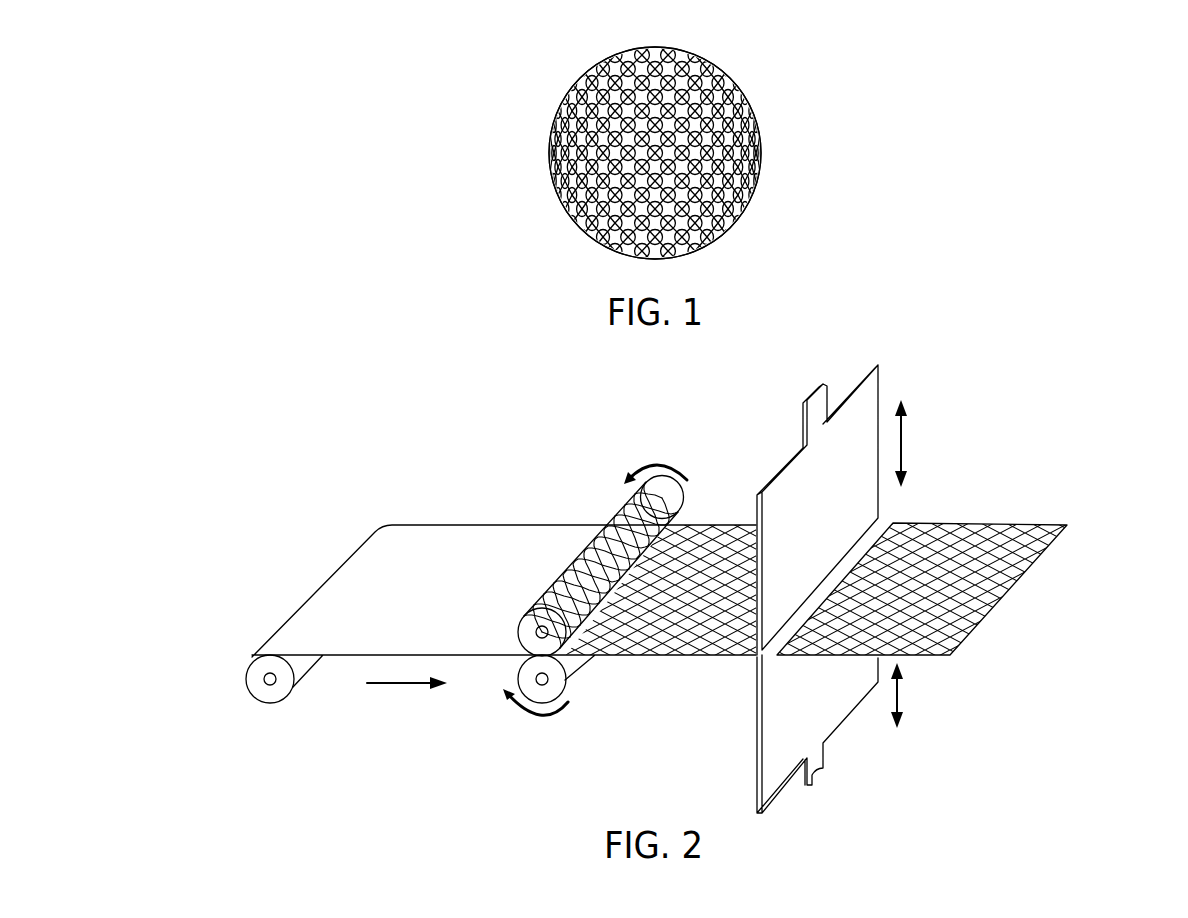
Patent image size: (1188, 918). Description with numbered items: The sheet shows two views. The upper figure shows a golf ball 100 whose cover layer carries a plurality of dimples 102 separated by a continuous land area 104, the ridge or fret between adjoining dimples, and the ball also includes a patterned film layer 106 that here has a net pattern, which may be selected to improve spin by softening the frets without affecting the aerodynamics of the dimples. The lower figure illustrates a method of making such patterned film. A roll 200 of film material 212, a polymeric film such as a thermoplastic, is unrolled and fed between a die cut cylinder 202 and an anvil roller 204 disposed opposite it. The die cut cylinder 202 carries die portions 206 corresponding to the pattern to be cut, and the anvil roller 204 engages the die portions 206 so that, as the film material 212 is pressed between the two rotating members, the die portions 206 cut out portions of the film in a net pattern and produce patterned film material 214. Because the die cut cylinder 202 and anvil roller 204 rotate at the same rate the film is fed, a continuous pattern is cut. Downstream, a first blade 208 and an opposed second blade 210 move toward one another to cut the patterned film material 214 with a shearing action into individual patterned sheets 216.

In FIG. 1, the golf ball 100 is at (781, 62).
In FIG. 1, the dimples 102 is at (606, 96).
In FIG. 1, the land area 104 is at (620, 98).
In FIG. 1, the patterned film layer 106 is at (710, 196).
In FIG. 2, the roll 200 is at (255, 670).
In FIG. 2, the die cut cylinder 202 is at (680, 492).
In FIG. 2, the anvil roller 204 is at (558, 678).
In FIG. 2, the die portions 206 is at (640, 507).
In FIG. 2, the first blade 208 is at (874, 386).
In FIG. 2, the second blade 210 is at (847, 708).
In FIG. 2, the film material 212 is at (421, 530).
In FIG. 2, the patterned film material 214 is at (727, 540).
In FIG. 2, the patterned sheets 216 is at (980, 538).